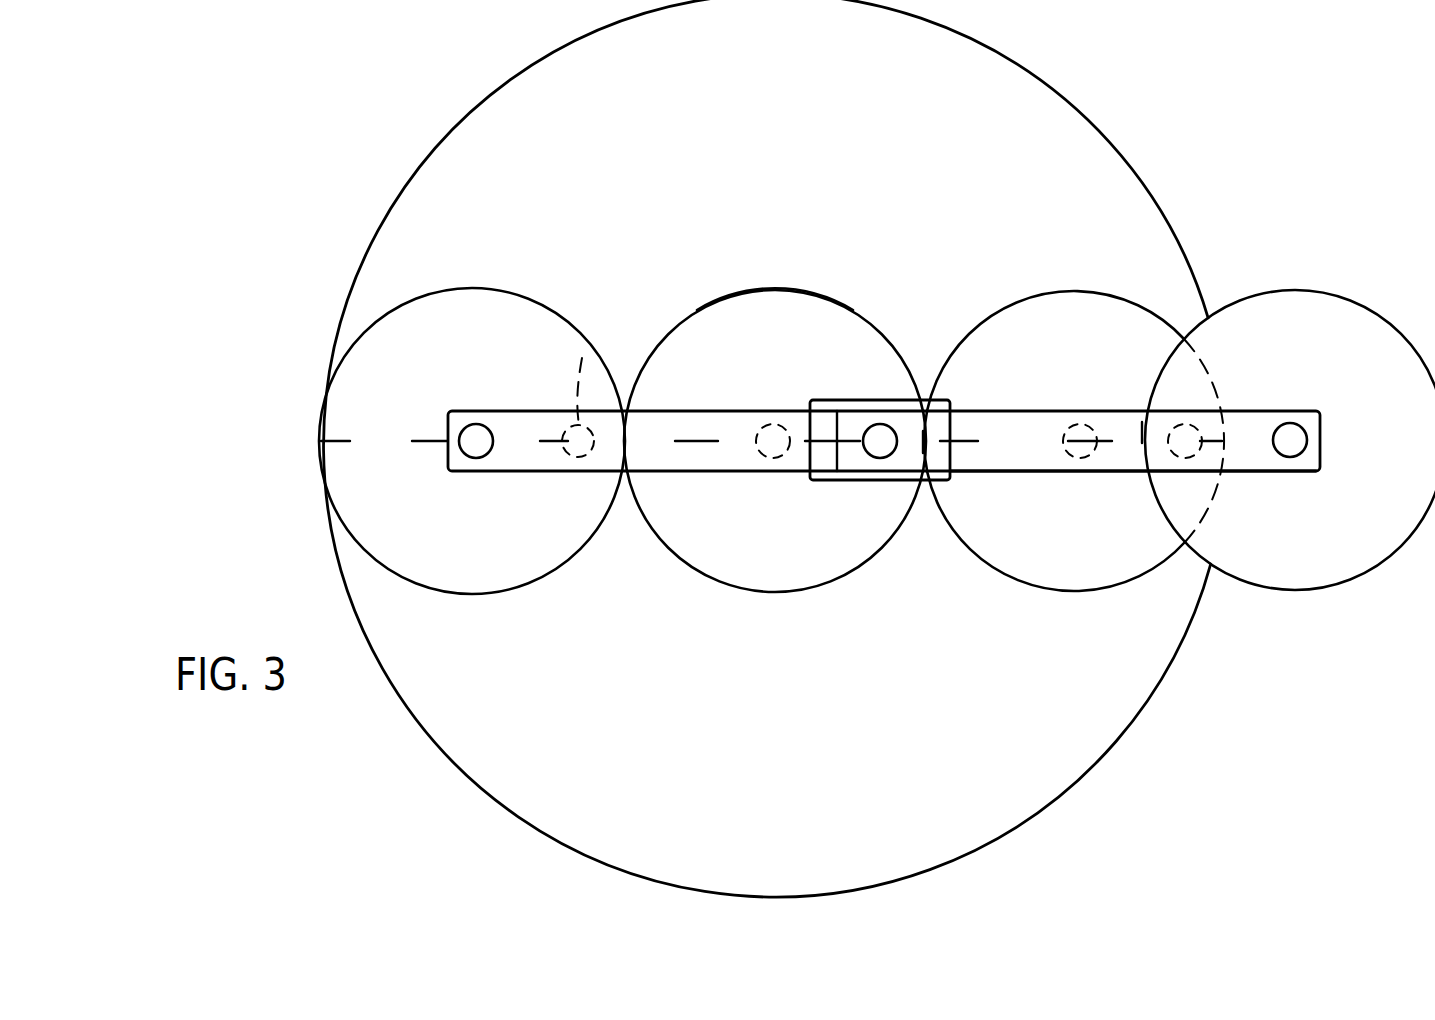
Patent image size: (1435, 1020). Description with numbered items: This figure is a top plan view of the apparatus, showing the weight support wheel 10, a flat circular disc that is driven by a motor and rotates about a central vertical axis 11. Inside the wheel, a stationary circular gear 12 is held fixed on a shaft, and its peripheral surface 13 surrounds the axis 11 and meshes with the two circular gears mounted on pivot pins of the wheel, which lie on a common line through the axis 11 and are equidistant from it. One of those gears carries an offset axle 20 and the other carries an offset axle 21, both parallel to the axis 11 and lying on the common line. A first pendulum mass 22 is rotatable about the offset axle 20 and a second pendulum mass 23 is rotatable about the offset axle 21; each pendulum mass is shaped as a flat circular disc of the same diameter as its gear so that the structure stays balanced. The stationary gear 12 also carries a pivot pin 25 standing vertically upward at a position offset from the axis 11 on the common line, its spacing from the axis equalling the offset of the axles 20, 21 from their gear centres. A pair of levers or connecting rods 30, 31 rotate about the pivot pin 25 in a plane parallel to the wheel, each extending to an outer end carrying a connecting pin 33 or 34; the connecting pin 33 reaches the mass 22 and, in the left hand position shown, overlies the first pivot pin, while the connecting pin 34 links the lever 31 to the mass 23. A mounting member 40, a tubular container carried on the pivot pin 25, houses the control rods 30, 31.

The weight support wheel 10 is at (1111, 171).
The central vertical axis 11 is at (783, 450).
The stationary circular gear 12 is at (803, 573).
The peripheral surface 13 is at (783, 291).
The offset axle 20 is at (590, 338).
The offset axle 21 is at (1220, 346).
The first pendulum mass 22 is at (553, 545).
The second pendulum mass 23 is at (1362, 310).
The pivot pin 25 is at (877, 452).
The lever or connecting rod 30 is at (692, 460).
The lever or connecting rod 31 is at (1097, 462).
The connecting pin 33 is at (475, 444).
The connecting pin 34 is at (1297, 447).
The mounting member 40 is at (867, 400).